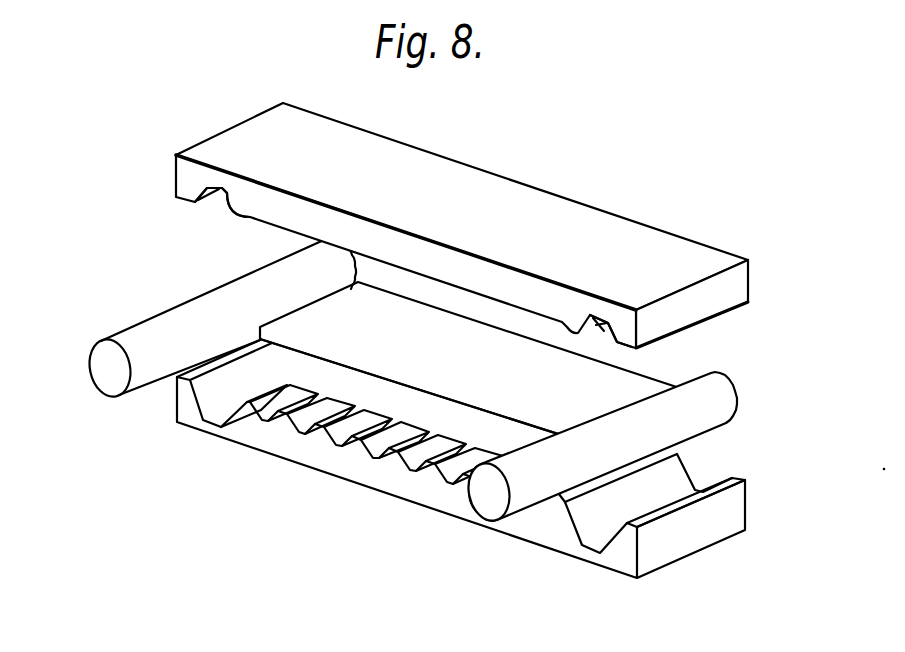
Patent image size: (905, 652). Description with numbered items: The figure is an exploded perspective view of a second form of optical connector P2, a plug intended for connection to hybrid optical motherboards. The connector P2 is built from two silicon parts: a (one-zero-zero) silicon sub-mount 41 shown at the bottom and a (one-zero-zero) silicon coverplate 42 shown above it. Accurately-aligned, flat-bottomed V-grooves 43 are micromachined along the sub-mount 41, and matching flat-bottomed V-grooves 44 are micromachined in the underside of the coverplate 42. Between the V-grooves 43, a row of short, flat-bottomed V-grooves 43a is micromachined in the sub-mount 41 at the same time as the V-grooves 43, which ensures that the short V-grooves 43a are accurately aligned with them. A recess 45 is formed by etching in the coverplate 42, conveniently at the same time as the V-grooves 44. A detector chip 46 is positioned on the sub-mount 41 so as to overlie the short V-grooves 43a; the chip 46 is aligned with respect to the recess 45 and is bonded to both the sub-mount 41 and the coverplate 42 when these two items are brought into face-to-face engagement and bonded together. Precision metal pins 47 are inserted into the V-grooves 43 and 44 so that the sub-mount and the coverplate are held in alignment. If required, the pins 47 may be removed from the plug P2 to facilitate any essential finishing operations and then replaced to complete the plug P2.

The silicon sub-mount 41 is at (713, 523).
The silicon coverplate 42 is at (485, 195).
The V-grooves 43 is at (202, 397).
The short V-grooves 43a is at (333, 430).
The V-grooves 44 is at (196, 199).
The recess 45 is at (253, 220).
The detector chip 46 is at (620, 398).
The precision metal pins 47 is at (130, 338).
The optical connector P2 is at (658, 212).